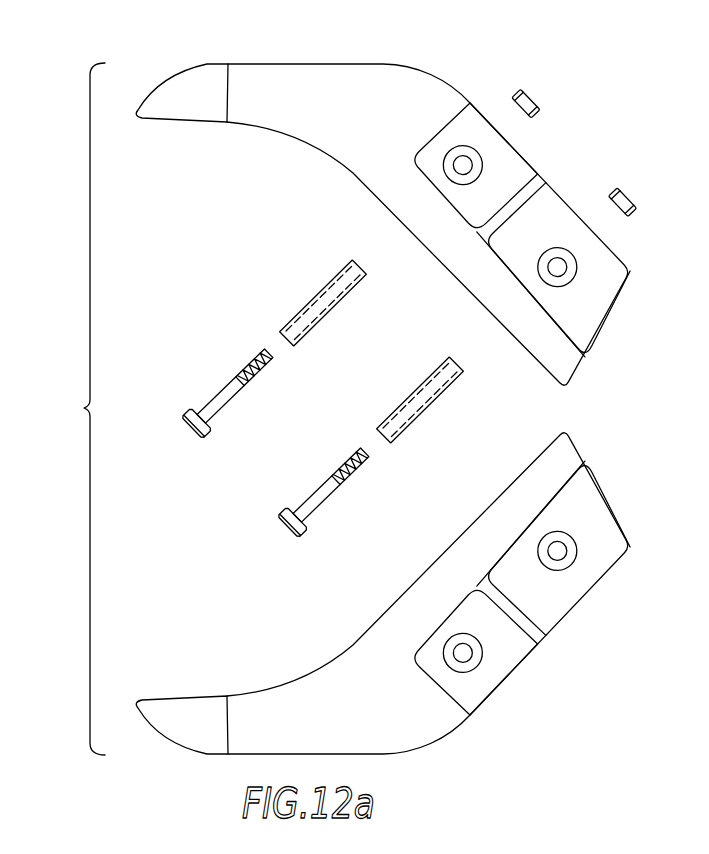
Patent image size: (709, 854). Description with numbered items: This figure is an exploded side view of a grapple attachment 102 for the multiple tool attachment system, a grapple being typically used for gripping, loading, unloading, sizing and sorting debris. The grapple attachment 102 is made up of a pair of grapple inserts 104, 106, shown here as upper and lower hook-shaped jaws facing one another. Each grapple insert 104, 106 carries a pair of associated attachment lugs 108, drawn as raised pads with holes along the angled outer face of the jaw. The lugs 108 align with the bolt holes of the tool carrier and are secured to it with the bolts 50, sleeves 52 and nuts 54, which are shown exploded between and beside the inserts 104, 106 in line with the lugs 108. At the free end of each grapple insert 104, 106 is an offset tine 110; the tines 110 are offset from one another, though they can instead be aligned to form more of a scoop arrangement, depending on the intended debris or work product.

The bolt 50 is at (233, 378).
The sleeve 52 is at (323, 290).
The nut 54 is at (533, 94).
The grapple attachment 102 is at (79, 409).
The grapple insert 104 is at (284, 76).
The grapple insert 106 is at (332, 663).
The attachment lug 108 is at (507, 162).
The offset tine 110 is at (192, 110).